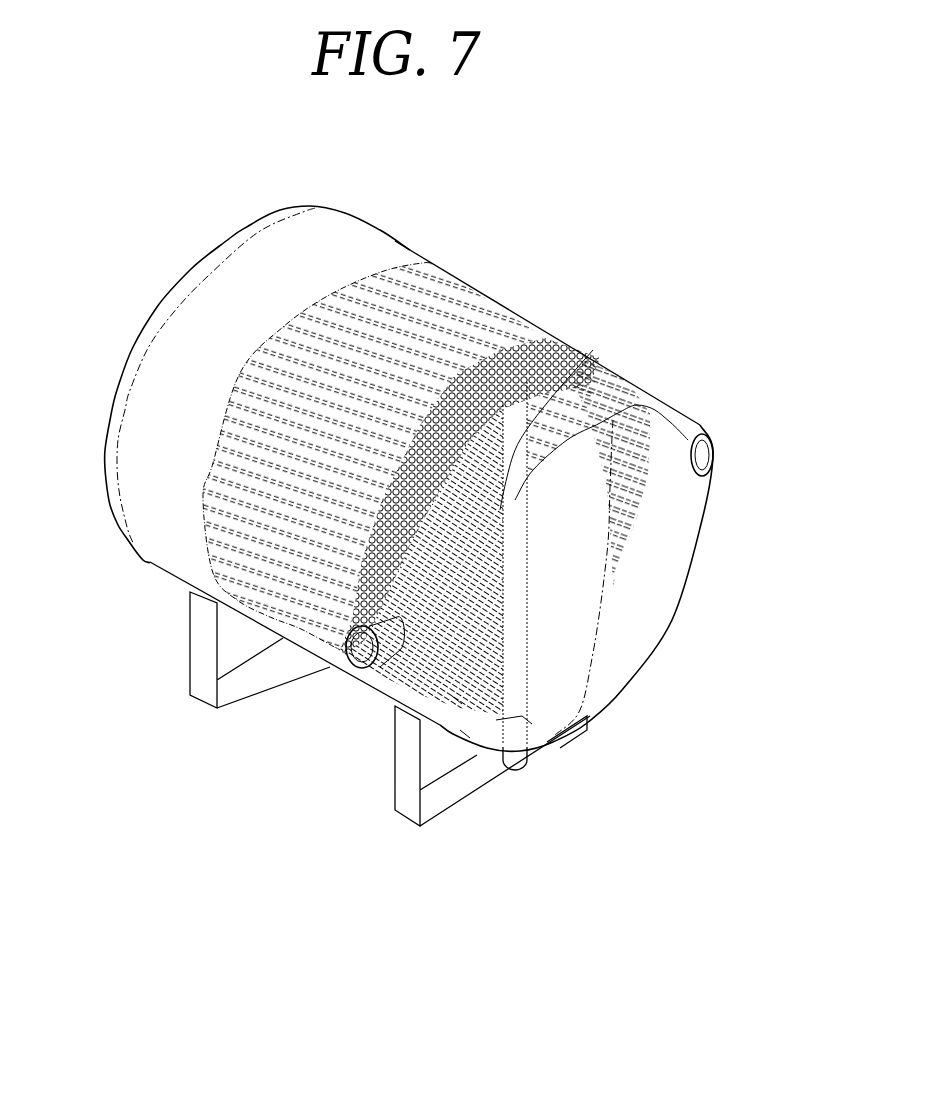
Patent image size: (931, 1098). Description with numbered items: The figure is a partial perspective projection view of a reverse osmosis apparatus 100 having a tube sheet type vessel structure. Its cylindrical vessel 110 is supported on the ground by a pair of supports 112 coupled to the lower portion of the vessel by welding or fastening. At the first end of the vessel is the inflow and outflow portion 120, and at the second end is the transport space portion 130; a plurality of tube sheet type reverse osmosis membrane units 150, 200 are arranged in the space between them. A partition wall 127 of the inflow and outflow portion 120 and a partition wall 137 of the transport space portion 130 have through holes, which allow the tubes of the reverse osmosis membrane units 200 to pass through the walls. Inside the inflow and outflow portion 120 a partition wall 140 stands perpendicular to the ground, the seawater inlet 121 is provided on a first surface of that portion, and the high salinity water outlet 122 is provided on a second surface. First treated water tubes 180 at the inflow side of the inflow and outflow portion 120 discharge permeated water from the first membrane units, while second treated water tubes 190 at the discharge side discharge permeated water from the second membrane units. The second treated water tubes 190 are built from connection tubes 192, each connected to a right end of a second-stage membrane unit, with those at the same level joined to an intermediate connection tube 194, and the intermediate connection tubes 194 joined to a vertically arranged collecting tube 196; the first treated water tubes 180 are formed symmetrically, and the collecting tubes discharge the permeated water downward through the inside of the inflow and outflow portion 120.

The reverse osmosis apparatus 100 is at (431, 203).
The cylindrical vessel 110 is at (512, 312).
The supports 112 is at (200, 704).
The inflow and outflow portion 120 is at (655, 410).
The seawater inlet 121 is at (717, 464).
The high salinity water outlet 122 is at (347, 668).
The partition wall of the inflow and outflow portion 127 is at (585, 339).
The transport space portion 130 is at (197, 352).
The partition wall of the transport space portion 137 is at (350, 285).
The partition wall 140 is at (583, 621).
The reverse osmosis membrane units 150 is at (507, 236).
The reverse osmosis membrane units 200 is at (374, 456).
The first treated water tubes 180 is at (556, 739).
The second treated water tubes 190 is at (572, 860).
The connection tubes 192 is at (456, 700).
The intermediate connection tube 194 is at (465, 735).
The collecting tube 196 is at (527, 720).